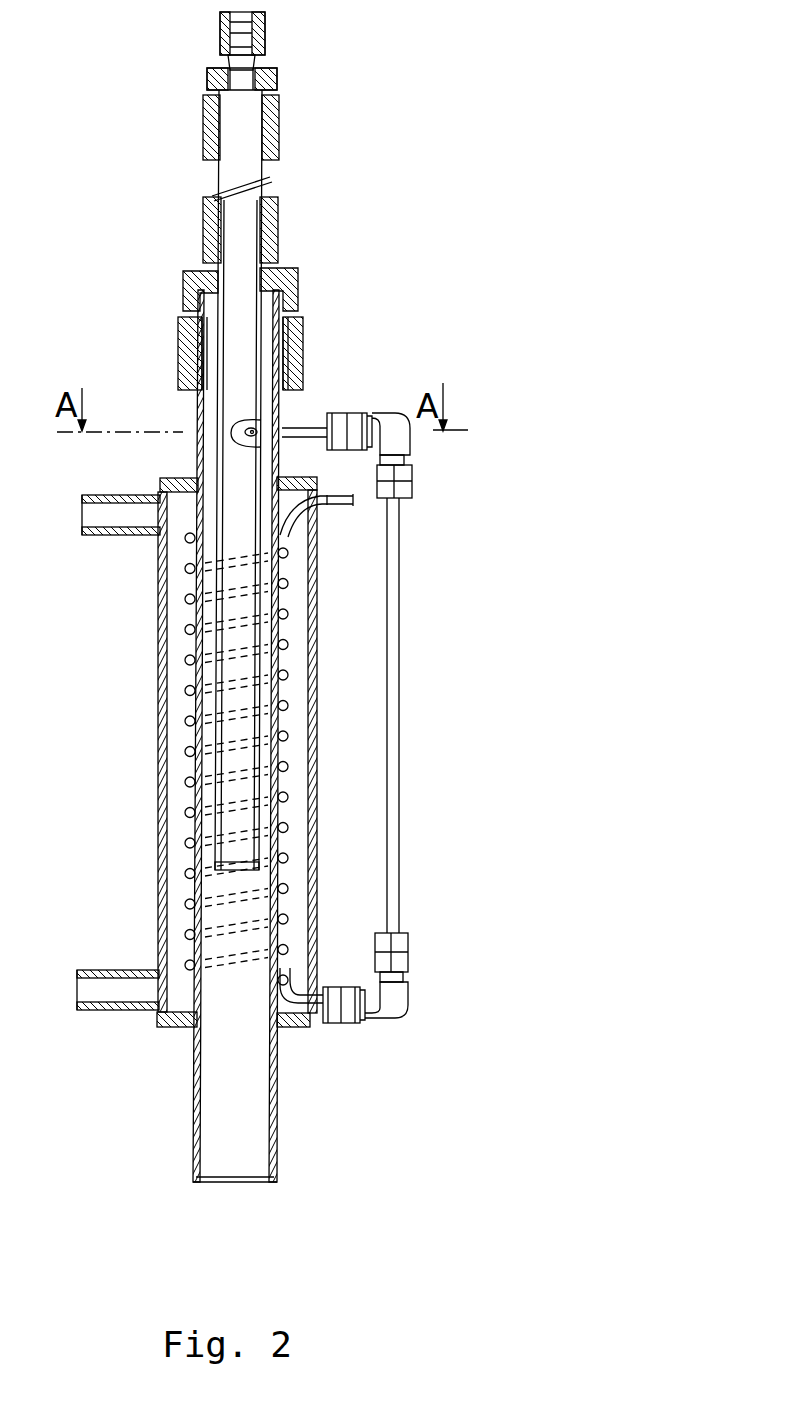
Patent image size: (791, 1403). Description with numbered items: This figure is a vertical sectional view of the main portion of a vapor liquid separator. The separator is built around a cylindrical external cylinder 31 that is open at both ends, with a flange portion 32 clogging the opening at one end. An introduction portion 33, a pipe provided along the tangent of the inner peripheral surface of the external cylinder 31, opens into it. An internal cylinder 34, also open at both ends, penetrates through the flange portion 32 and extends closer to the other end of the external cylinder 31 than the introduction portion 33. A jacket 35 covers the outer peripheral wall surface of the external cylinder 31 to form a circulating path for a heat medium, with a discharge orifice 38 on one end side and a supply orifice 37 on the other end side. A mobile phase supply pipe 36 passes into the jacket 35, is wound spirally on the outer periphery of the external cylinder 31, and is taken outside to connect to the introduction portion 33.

The external cylinder 31 is at (300, 423).
The flange portion 32 is at (278, 270).
The introduction portion 33 is at (283, 405).
The internal cylinder 34 is at (197, 677).
The jacket 35 is at (157, 780).
The mobile phase supply pipe 36 is at (292, 988).
The supply orifice 37 is at (92, 970).
The discharge orifice 38 is at (104, 537).